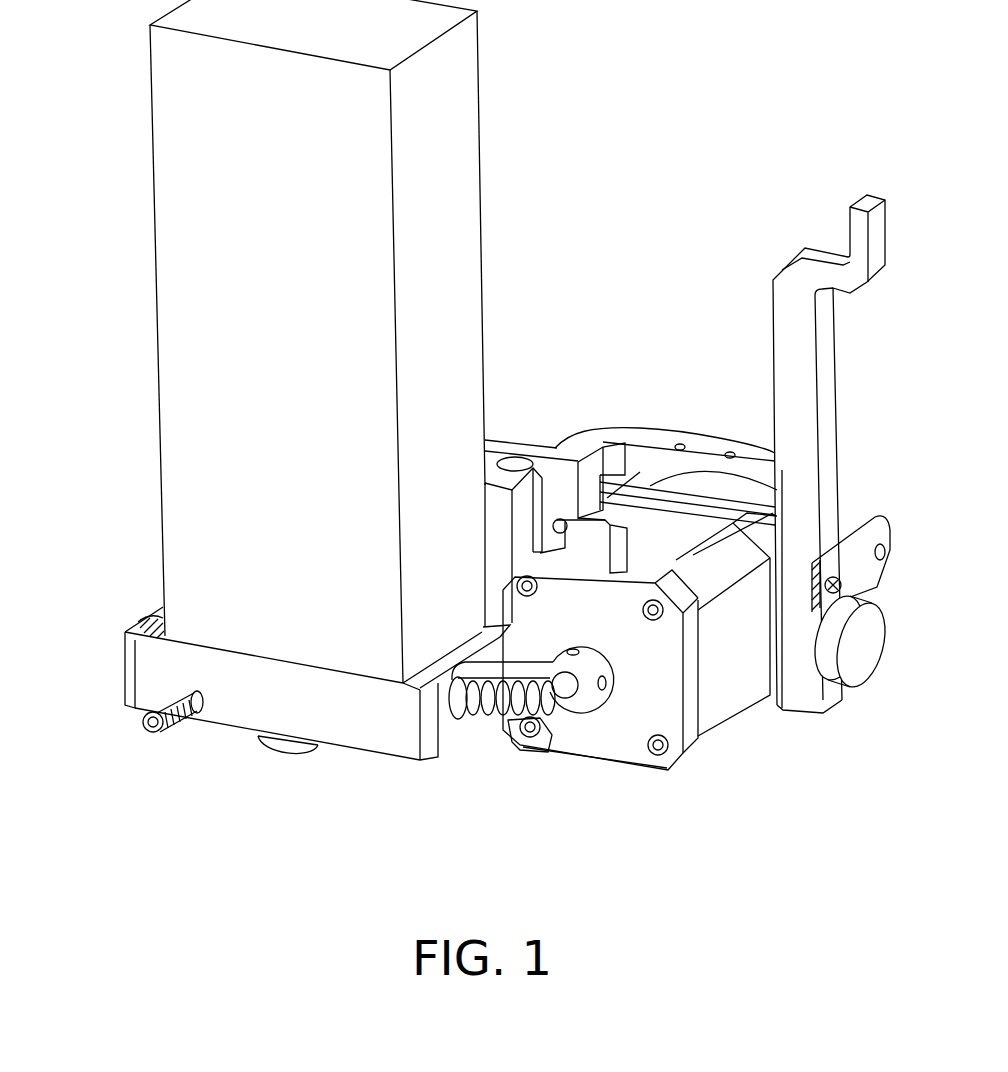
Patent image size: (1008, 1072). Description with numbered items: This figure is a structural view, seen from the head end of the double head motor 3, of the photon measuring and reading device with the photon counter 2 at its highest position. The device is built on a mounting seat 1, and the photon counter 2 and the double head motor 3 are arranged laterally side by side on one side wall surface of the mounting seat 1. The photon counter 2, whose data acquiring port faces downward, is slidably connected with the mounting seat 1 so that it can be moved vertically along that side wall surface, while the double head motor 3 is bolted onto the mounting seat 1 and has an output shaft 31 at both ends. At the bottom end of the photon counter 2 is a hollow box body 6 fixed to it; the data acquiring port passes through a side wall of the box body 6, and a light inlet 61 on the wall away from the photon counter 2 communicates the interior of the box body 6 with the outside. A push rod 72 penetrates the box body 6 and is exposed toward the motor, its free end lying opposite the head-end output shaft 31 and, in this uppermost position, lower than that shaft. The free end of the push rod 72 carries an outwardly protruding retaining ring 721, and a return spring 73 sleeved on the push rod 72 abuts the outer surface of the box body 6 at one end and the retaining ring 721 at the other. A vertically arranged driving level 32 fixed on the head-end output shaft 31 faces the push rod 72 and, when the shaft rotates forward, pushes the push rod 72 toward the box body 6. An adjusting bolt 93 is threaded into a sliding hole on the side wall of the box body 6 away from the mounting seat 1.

The mounting seat 1 is at (572, 452).
The photon counter 2 is at (163, 248).
The double head motor 3 is at (728, 688).
The output shaft 31 is at (567, 687).
The driving level 32 is at (513, 668).
The box body 6 is at (155, 668).
The light inlet 61 is at (287, 752).
The push rod 72 is at (560, 716).
The retaining ring 721 is at (570, 720).
The return spring 73 is at (505, 700).
The adjusting bolt 93 is at (145, 735).